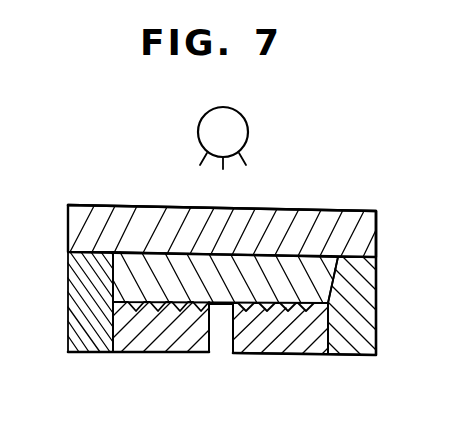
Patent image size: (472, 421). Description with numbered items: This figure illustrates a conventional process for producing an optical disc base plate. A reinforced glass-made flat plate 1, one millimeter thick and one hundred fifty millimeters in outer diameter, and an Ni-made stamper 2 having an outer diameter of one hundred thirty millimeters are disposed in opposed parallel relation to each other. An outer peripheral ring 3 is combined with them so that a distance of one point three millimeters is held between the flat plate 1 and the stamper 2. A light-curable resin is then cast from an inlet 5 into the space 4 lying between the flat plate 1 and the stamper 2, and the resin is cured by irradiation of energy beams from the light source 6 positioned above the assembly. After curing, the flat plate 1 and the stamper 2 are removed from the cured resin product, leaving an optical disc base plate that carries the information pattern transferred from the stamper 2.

The flat plate 1 is at (367, 225).
The stamper 2 is at (300, 339).
The outer peripheral ring 3 is at (366, 299).
The space 4 is at (123, 281).
The inlet 5 is at (218, 340).
The light source 6 is at (198, 127).